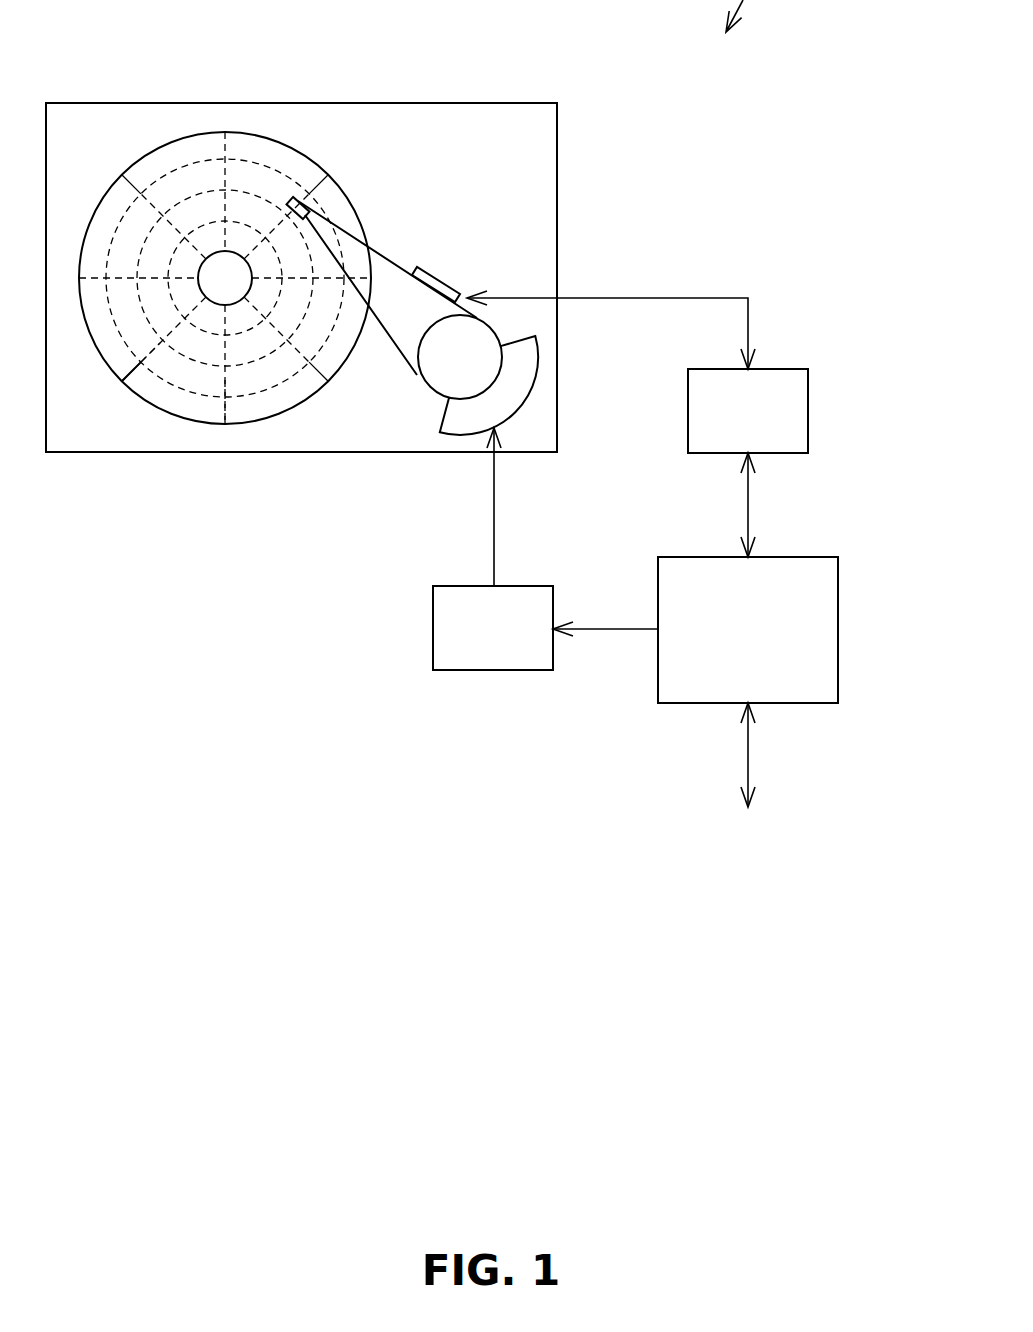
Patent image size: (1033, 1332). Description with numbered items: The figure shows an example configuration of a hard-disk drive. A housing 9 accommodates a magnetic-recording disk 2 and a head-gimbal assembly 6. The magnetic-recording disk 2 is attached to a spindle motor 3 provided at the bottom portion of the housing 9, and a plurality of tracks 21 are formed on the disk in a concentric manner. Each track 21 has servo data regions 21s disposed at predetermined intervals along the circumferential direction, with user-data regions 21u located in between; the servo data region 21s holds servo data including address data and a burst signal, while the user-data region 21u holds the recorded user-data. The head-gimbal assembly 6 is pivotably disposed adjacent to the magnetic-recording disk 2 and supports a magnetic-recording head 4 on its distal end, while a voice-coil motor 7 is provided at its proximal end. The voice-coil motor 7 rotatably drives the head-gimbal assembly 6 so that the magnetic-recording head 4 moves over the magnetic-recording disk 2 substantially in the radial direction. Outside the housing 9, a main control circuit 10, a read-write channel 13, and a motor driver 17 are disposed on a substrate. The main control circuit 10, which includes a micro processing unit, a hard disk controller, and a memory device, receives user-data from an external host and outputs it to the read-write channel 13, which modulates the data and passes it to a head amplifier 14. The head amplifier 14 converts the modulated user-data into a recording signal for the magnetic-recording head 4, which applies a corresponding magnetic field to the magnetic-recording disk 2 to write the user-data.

The housing 9 is at (470, 103).
The magnetic-recording disk 2 is at (153, 165).
The spindle motor 3 is at (203, 272).
The magnetic-recording head 4 is at (296, 200).
The head-gimbal assembly 6 is at (405, 342).
The head amplifier 14 is at (437, 280).
The voice-coil motor 7 is at (456, 428).
The read-write channel 13 is at (783, 369).
The main control circuit 10 is at (783, 557).
The motor driver 17 is at (492, 672).
The track 21 is at (120, 330).
The user-data region 21u is at (155, 372).
The servo data region 21s is at (228, 407).